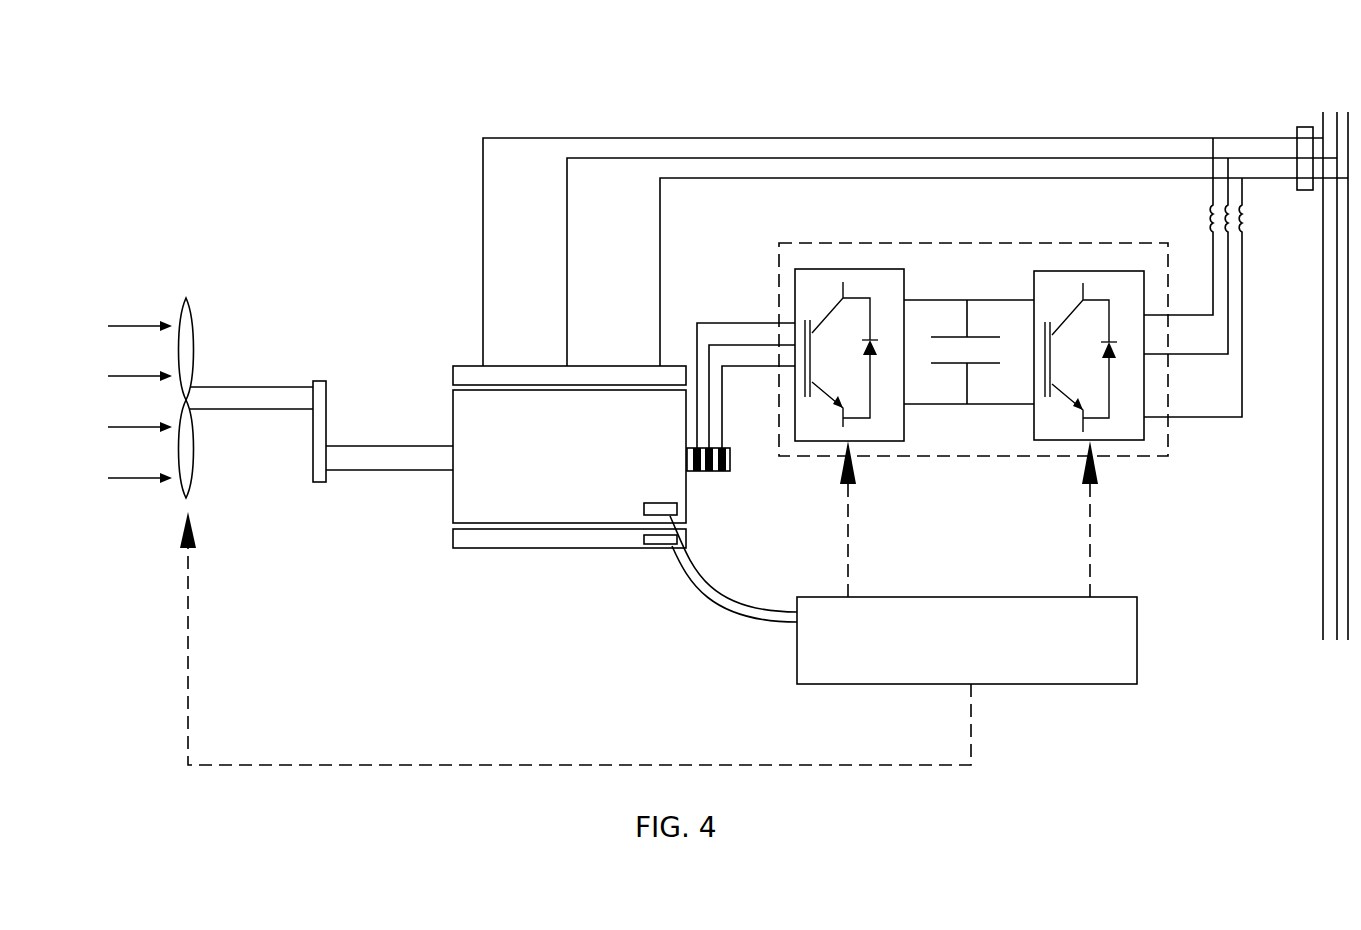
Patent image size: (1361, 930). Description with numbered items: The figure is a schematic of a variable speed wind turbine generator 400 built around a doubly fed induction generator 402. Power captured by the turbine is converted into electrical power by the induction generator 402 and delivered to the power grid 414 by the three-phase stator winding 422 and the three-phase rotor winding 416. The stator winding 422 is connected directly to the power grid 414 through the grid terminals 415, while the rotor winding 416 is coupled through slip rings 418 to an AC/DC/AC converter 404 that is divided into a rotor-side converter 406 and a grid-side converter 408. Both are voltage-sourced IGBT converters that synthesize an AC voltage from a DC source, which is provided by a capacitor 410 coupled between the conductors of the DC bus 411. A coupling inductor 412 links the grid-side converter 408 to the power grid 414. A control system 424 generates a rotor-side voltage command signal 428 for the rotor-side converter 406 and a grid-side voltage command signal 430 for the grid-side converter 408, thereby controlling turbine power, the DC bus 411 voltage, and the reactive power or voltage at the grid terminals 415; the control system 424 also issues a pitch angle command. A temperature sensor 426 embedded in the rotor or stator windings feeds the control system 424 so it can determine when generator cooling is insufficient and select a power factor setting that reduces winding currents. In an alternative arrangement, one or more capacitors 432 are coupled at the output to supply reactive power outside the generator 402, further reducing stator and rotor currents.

The variable speed wind turbine generator 400 is at (513, 93).
The doubly fed induction generator 402 is at (453, 330).
The AC/DC/AC converter 404 is at (790, 243).
The rotor-side converter 406 is at (800, 441).
The grid-side converter 408 is at (1132, 441).
The capacitor 410 is at (973, 378).
The DC bus 411 is at (944, 275).
The coupling inductor 412 is at (1198, 213).
The power grid 414 is at (1323, 606).
The grid terminals 415 is at (1308, 208).
The three-phase rotor winding 416 is at (687, 505).
The slip rings 418 is at (724, 484).
The three-phase stator winding 422 is at (678, 365).
The control system 424 is at (1137, 684).
The temperature sensor 426 is at (668, 503).
The rotor-side voltage command signal 428 is at (852, 566).
The grid-side voltage command signal 430 is at (1092, 566).
The capacitors 432 is at (1305, 127).